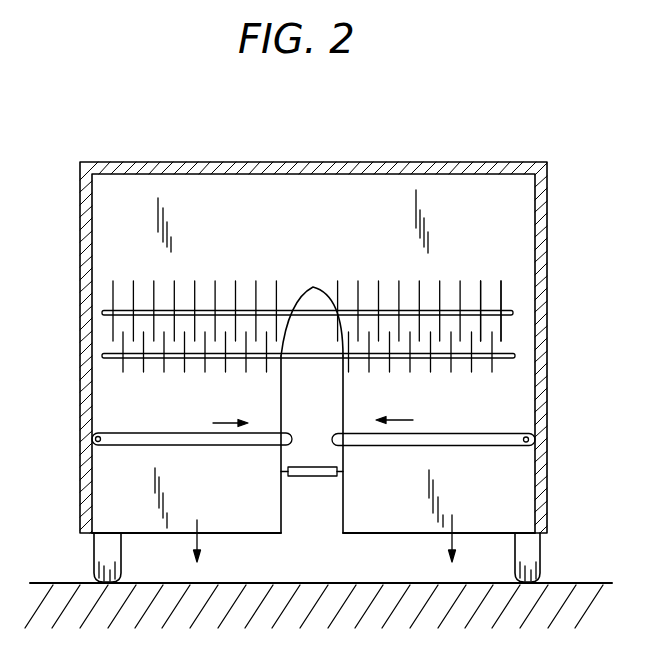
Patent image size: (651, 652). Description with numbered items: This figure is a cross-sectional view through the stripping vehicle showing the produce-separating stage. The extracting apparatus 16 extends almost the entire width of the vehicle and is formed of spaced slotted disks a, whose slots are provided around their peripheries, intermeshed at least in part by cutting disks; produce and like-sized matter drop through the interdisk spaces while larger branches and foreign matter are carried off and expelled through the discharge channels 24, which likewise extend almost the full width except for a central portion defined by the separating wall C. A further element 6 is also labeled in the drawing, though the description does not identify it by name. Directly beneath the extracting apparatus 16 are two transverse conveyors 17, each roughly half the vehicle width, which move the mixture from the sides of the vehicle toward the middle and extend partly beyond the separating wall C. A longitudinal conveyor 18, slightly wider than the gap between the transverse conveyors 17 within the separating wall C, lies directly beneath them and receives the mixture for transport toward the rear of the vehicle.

The slotted disks a is at (175, 288).
The lower toothed rod 6 is at (136, 373).
The extracting apparatus 16 is at (506, 296).
The separating wall C is at (316, 289).
The transverse conveyors 17 is at (188, 432).
The longitudinal conveyor 18 is at (310, 472).
The discharge channels 24 is at (95, 504).